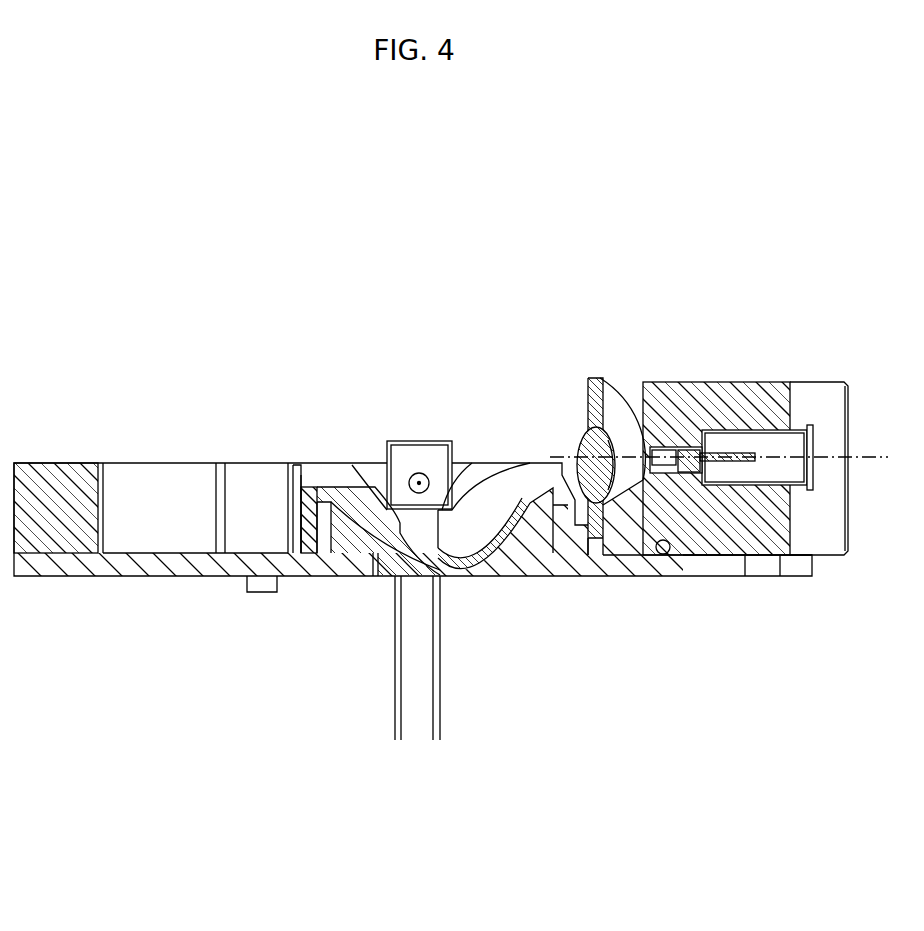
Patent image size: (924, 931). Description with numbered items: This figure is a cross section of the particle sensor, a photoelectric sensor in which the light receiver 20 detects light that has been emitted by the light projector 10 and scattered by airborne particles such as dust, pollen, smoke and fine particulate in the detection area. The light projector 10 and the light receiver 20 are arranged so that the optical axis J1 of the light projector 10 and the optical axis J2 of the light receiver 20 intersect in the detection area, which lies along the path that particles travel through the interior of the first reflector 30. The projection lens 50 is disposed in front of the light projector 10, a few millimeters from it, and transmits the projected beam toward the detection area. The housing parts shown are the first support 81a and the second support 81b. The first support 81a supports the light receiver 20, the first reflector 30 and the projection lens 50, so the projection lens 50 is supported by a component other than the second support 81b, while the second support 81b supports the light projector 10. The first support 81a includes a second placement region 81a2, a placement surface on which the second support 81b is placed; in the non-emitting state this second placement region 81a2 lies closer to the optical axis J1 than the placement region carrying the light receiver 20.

The light projector 10 is at (662, 450).
The light receiver 20 is at (420, 470).
The first reflector 30 is at (494, 525).
The projection lens 50 is at (607, 393).
The first support 81a is at (525, 572).
The second placement region 81a2 is at (670, 556).
The second support 81b is at (768, 532).
The optical axis of light projector J1 is at (870, 457).
The optical axis of light receiver J2 is at (417, 483).